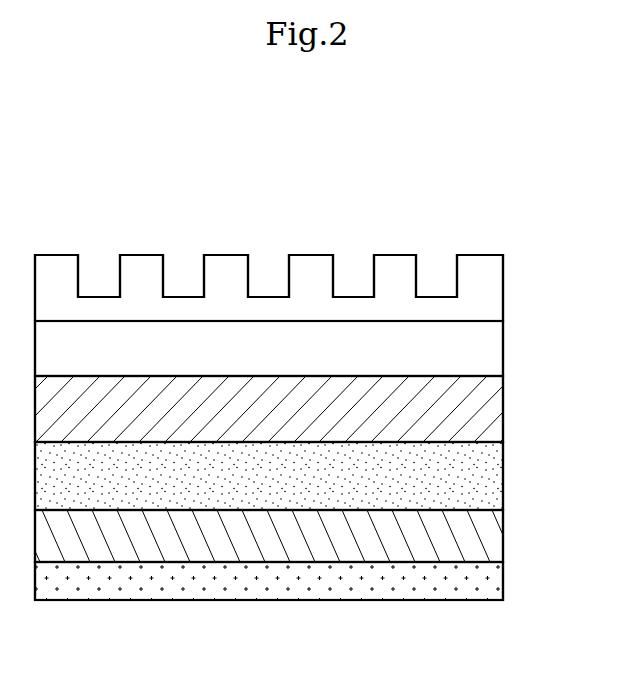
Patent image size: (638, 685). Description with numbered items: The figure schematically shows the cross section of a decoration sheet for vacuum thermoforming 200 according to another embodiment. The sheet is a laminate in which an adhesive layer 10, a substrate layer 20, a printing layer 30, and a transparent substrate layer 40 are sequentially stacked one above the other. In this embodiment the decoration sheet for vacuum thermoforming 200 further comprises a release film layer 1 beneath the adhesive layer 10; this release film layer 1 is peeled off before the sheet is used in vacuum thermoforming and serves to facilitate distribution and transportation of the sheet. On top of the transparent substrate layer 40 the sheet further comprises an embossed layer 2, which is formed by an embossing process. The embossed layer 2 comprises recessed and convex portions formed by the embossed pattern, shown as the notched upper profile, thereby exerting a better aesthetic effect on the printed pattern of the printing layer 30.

The decoration sheet for vacuum thermoforming 200 is at (304, 180).
The embossed layer 2 is at (485, 305).
The transparent substrate layer 40 is at (485, 347).
The printing layer 30 is at (485, 407).
The substrate layer 20 is at (485, 475).
The adhesive layer 10 is at (485, 536).
The release film layer 1 is at (488, 581).